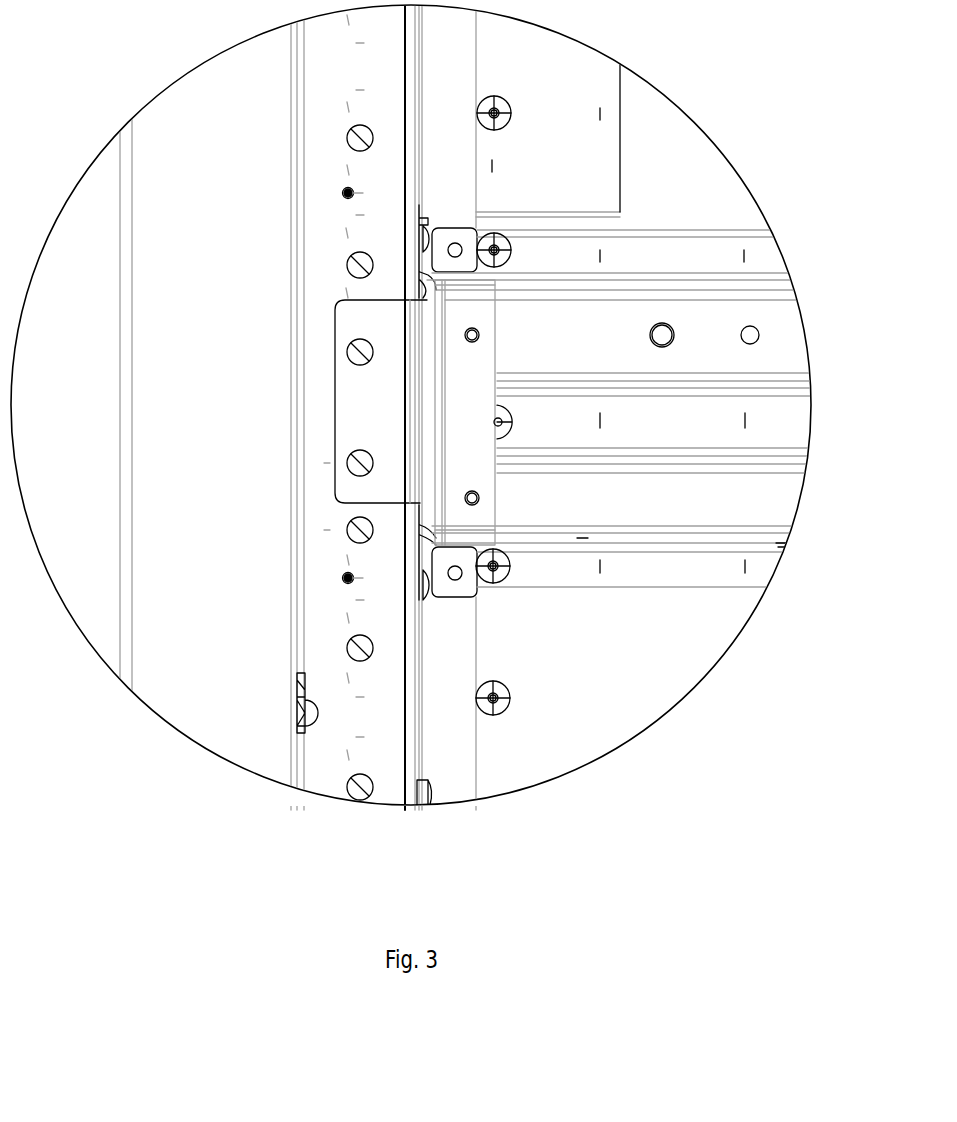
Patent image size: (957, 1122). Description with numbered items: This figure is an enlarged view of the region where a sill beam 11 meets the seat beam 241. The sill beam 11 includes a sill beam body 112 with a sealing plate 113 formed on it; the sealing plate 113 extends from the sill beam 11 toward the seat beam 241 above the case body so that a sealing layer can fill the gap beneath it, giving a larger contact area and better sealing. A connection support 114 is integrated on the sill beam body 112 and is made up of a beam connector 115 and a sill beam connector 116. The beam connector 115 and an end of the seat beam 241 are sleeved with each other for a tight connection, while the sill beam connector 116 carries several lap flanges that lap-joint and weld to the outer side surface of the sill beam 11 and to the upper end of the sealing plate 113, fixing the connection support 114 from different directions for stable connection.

The sill beam 11 is at (502, 878).
The sill beam body 112 is at (330, 762).
The sealing plate 113 is at (452, 678).
The connection support 114 is at (321, 405).
The beam connector 115 is at (470, 372).
The sill beam connector 116 is at (388, 395).
The seat beam 241 is at (703, 332).